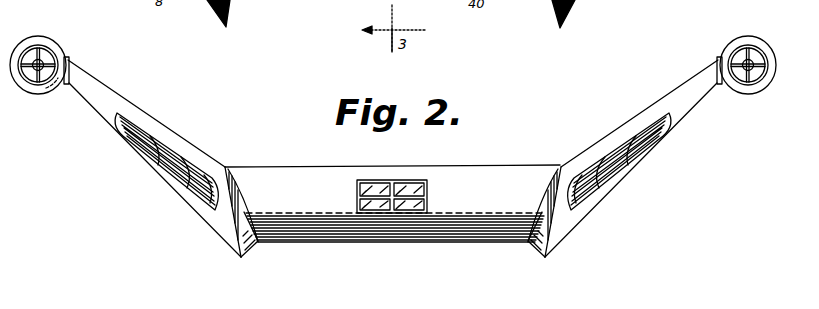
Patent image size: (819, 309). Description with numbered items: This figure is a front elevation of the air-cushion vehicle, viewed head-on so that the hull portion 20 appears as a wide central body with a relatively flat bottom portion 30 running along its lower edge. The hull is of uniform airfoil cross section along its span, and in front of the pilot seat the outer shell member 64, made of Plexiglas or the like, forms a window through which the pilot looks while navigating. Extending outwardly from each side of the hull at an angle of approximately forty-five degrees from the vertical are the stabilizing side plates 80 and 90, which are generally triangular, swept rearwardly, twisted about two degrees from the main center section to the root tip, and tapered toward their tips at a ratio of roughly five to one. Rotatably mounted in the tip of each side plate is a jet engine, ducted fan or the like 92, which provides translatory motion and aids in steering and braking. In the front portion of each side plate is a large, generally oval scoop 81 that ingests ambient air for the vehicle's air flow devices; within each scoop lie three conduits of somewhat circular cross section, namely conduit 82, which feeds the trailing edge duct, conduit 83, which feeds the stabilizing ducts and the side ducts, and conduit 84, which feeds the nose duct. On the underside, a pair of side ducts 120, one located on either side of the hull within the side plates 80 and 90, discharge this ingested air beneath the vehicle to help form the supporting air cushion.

The hull portion 20 is at (302, 166).
The flat bottom portion 30 is at (388, 243).
The outer shell member 64 is at (414, 182).
The stabilizing side plate 80 is at (126, 98).
The stabilizing side plate 90 is at (676, 85).
The jet engine, ducted fan or the like 92 is at (40, 36).
The scoop 81 is at (148, 162).
The conduit 82 is at (135, 130).
The conduit 83 is at (166, 174).
The conduit 84 is at (197, 190).
The side duct 120 is at (252, 252).